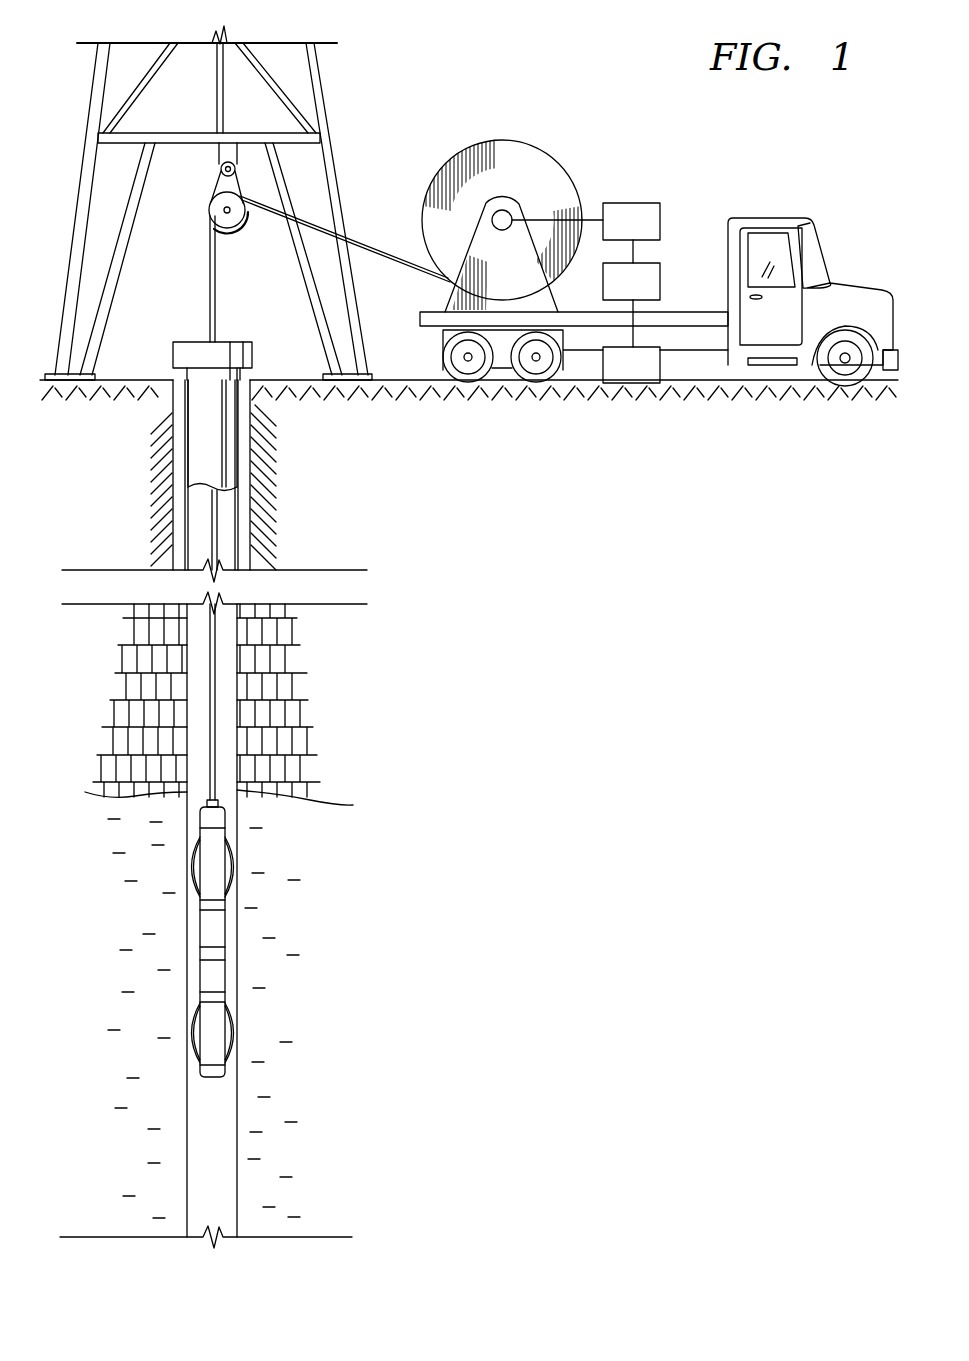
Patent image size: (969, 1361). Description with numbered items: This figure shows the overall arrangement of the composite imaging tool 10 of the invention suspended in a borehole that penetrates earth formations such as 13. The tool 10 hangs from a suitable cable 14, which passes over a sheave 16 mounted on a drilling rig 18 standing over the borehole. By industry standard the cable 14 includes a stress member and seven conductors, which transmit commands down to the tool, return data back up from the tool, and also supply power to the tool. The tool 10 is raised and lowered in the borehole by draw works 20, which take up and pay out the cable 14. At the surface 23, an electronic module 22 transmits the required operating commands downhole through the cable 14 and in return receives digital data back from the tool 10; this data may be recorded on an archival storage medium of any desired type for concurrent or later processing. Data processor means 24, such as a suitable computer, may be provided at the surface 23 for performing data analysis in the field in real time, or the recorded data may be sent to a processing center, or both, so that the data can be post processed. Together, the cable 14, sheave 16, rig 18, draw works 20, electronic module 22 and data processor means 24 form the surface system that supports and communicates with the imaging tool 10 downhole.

The composite imaging tool 10 is at (227, 929).
The earth formations 13 is at (347, 751).
The cable 14 is at (217, 288).
The sheave 16 is at (208, 210).
The drilling rig 18 is at (88, 92).
The draw works 20 is at (455, 166).
The electronic module 22 is at (660, 222).
The surface 23 is at (400, 380).
The data processor means 24 is at (660, 281).